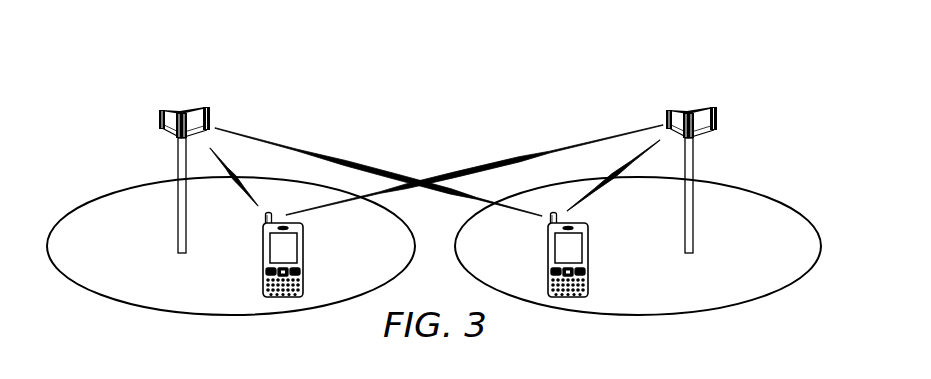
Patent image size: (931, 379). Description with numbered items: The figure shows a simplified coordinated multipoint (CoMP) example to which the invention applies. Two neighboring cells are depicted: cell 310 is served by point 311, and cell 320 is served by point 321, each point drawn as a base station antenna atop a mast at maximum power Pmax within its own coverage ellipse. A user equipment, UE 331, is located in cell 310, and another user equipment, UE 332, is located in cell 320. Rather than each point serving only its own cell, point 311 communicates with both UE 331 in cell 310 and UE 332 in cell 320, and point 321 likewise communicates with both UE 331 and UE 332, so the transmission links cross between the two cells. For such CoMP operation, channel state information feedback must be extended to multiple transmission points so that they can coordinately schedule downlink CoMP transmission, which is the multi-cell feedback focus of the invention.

The cell 310 is at (93, 191).
The point 311 is at (159, 118).
The cell 320 is at (781, 190).
The point 321 is at (717, 122).
The UE 331 is at (263, 258).
The UE 332 is at (588, 256).